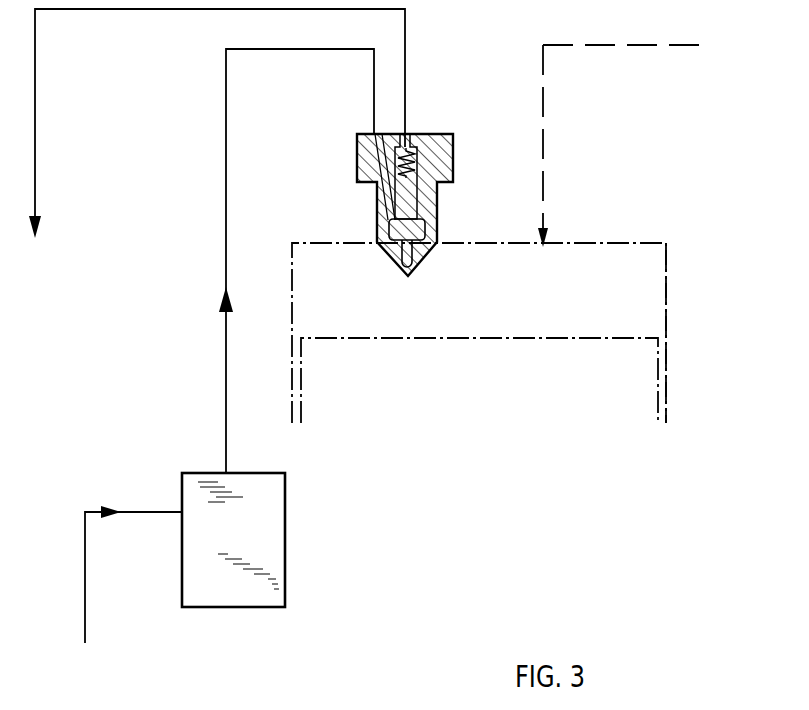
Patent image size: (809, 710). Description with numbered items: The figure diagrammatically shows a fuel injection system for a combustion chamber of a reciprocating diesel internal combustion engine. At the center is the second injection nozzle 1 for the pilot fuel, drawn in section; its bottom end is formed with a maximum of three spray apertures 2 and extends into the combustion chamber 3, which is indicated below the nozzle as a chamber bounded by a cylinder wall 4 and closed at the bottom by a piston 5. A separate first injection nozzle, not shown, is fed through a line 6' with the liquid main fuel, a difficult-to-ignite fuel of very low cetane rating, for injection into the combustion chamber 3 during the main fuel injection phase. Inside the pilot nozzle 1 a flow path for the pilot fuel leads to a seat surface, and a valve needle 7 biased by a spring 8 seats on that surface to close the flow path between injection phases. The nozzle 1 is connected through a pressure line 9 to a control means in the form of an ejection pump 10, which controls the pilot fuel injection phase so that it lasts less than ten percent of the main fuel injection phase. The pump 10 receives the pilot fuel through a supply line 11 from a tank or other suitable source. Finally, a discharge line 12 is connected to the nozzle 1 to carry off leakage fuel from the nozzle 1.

The second injection nozzle 1 is at (437, 207).
The spray apertures 2 is at (417, 249).
The combustion chamber 3 is at (545, 316).
The cylinder 4 is at (667, 291).
The piston 5 is at (567, 340).
The line 6' is at (624, 146).
The valve needle 7 is at (403, 226).
The spring 8 is at (414, 165).
The pressure line 9 is at (224, 115).
The ejection pump 10 is at (268, 546).
The supply line 11 is at (85, 562).
The discharge line 12 is at (106, 10).